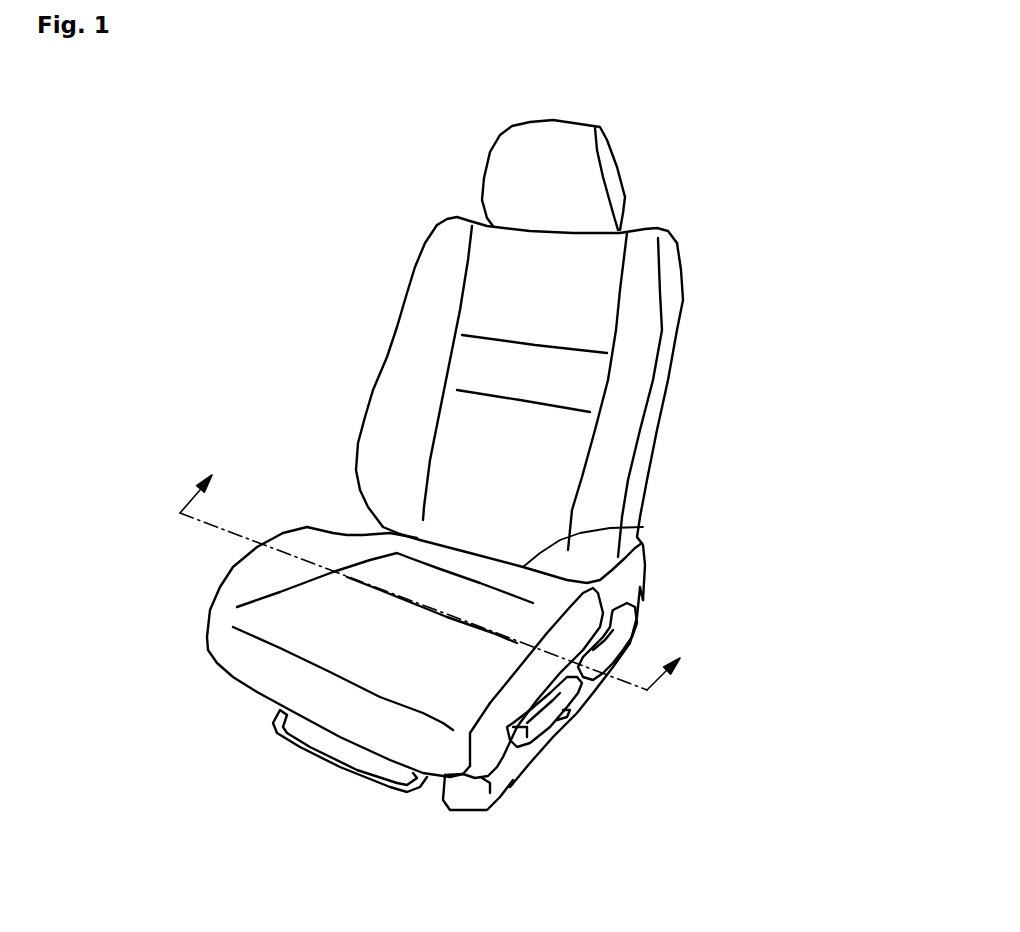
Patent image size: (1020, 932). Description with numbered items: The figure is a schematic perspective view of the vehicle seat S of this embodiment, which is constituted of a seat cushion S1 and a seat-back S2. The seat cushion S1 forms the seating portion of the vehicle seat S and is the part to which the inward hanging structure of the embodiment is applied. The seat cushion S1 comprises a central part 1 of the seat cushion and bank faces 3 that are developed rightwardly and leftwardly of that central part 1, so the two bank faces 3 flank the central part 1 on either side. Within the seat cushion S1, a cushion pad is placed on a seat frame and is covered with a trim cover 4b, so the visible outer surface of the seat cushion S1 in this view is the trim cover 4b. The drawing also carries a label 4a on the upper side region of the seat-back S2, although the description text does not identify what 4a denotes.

The vehicle seat S is at (288, 247).
The seat cushion S1 is at (345, 533).
The seat-back S2 is at (675, 312).
The central part of the seat cushion 1 is at (643, 527).
The bank faces 3 is at (253, 575).
The seat back side pad 4a is at (675, 260).
The trim cover 4b is at (210, 642).